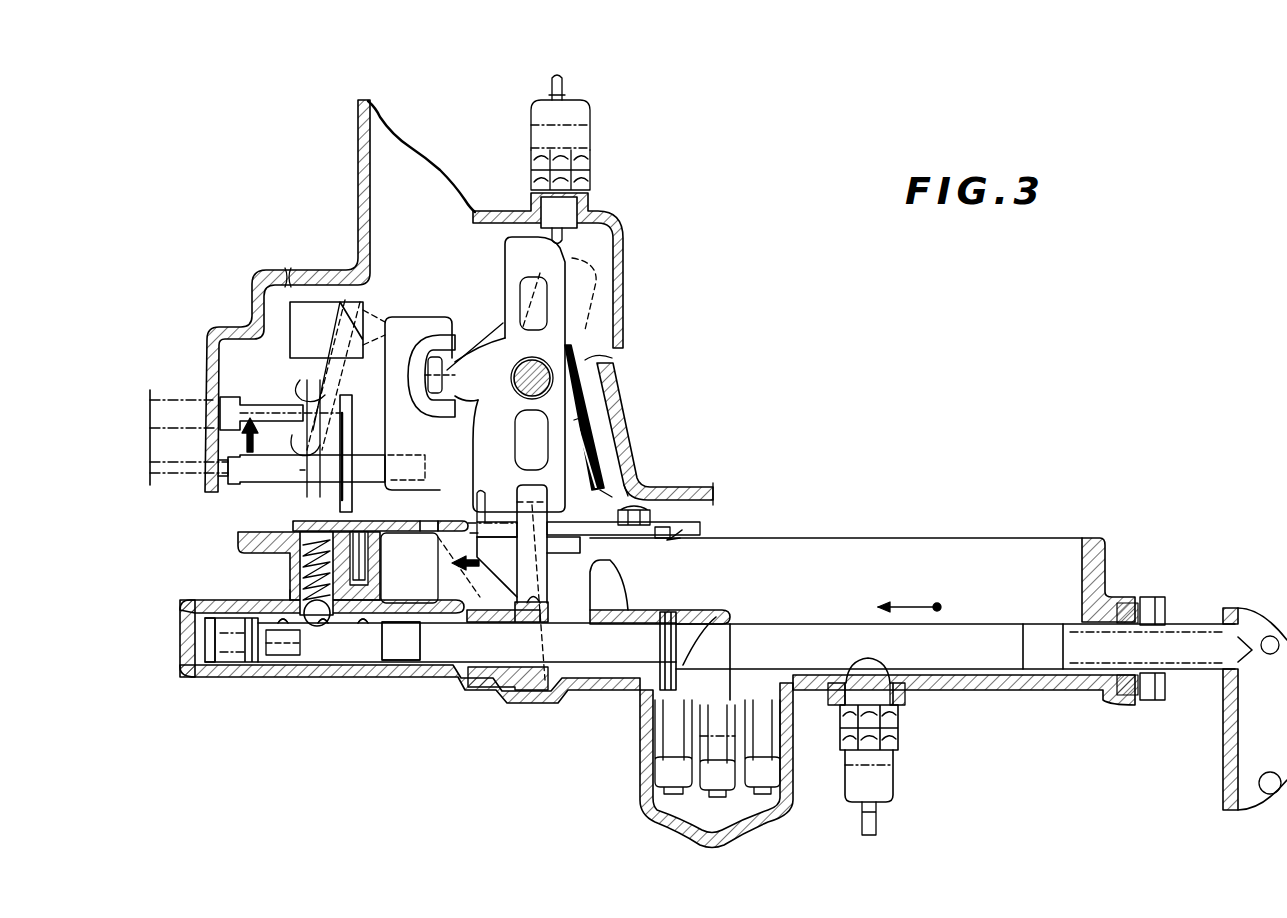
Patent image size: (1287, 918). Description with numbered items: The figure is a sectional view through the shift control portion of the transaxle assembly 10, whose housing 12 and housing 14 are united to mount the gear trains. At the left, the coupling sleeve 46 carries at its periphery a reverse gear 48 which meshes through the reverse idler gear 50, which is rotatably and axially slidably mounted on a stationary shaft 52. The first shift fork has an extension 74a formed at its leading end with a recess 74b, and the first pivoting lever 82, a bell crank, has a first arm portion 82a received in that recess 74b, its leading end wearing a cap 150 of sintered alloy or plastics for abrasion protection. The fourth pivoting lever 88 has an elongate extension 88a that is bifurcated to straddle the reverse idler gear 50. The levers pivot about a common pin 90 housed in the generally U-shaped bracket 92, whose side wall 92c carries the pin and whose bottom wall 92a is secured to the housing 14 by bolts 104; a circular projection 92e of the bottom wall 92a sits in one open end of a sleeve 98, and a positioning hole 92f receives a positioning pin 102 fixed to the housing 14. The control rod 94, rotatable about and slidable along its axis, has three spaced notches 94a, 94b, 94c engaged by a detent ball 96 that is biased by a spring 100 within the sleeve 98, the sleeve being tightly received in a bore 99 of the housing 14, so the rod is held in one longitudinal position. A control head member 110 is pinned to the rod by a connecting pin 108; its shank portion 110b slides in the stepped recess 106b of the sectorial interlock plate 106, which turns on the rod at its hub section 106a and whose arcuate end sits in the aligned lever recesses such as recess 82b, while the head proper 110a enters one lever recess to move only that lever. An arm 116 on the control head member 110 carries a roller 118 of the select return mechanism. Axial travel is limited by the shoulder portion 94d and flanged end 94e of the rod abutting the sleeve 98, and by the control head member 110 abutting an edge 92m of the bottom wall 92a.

The transaxle assembly 10 is at (203, 255).
The housing 12 is at (617, 230).
The housing 14 is at (1108, 557).
The coupling sleeve 46 is at (184, 462).
The reverse gear 48 is at (190, 413).
The reverse idler gear 50 is at (258, 400).
The stationary shaft 52 is at (315, 377).
The extension 74a is at (405, 320).
The recess 74b is at (438, 392).
The first pivoting lever 82 is at (600, 365).
The first arm portion 82a is at (462, 372).
The recess 82b is at (550, 497).
The fourth pivoting lever 88 is at (553, 277).
The elongate extension 88a is at (307, 500).
The common pin 90 is at (545, 365).
The bracket 92 is at (550, 430).
The bottom wall 92a is at (409, 568).
The side wall 92c is at (550, 396).
The circular projection 92e is at (293, 528).
The positioning hole 92f is at (682, 532).
The edge 92m is at (478, 540).
The control rod 94 is at (962, 650).
The notch 94a is at (325, 630).
The notch 94b is at (357, 630).
The notch 94c is at (288, 628).
The shoulder portion 94d is at (391, 654).
The flanged end 94e is at (257, 658).
The detent ball 96 is at (308, 628).
The sleeve 98 is at (288, 566).
The bore 99 is at (290, 594).
The spring 100 is at (288, 548).
The positioning pin 102 is at (660, 530).
The bolts 104 is at (380, 502).
The interlock plate 106 is at (568, 697).
The hub section 106a is at (503, 688).
The stepped recess 106b is at (540, 667).
The connecting pin 108 is at (655, 705).
The control head member 110 is at (565, 560).
The head proper 110a is at (598, 517).
The shank portion 110b is at (585, 553).
The arm 116 is at (713, 742).
The roller 118 is at (706, 780).
The caps 150 is at (435, 355).